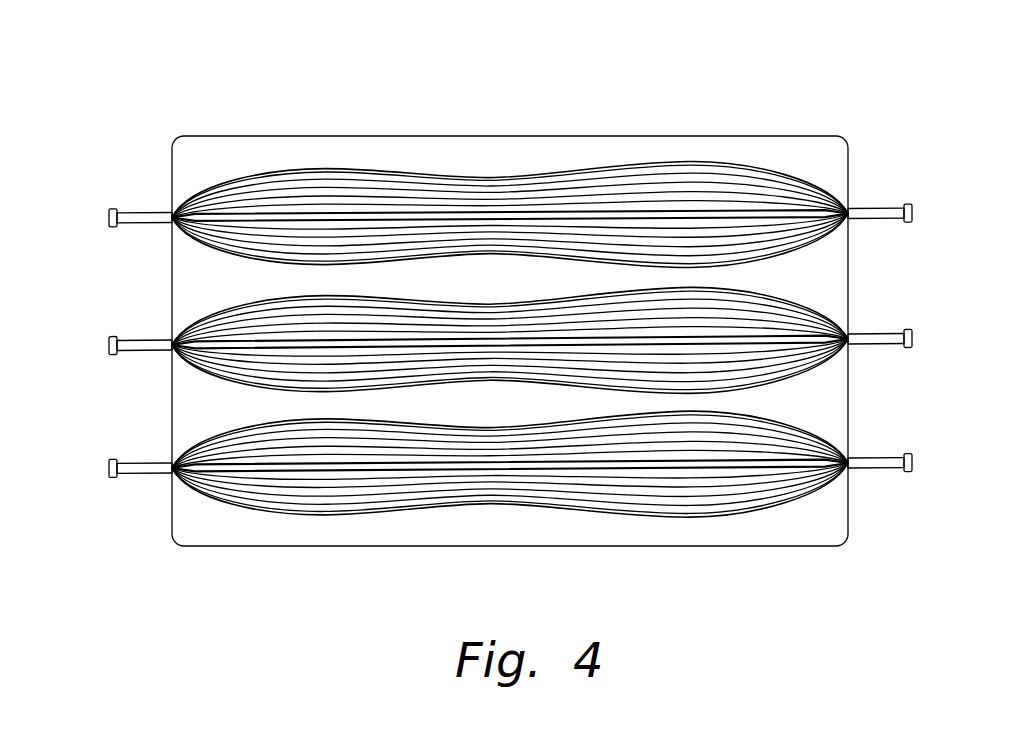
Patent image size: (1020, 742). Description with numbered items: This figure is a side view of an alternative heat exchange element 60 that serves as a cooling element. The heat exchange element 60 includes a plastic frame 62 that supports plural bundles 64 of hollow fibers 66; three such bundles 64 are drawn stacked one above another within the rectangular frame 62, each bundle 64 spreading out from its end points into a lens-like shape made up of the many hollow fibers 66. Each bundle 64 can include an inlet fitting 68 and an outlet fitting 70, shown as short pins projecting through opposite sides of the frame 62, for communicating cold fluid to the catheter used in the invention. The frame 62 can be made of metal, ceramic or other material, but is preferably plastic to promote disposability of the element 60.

The heat exchange element 60 is at (480, 108).
The plastic frame 62 is at (768, 135).
The bundle 64 is at (545, 177).
The hollow fibers 66 is at (333, 202).
The inlet fitting 68 is at (862, 331).
The outlet fitting 70 is at (128, 335).